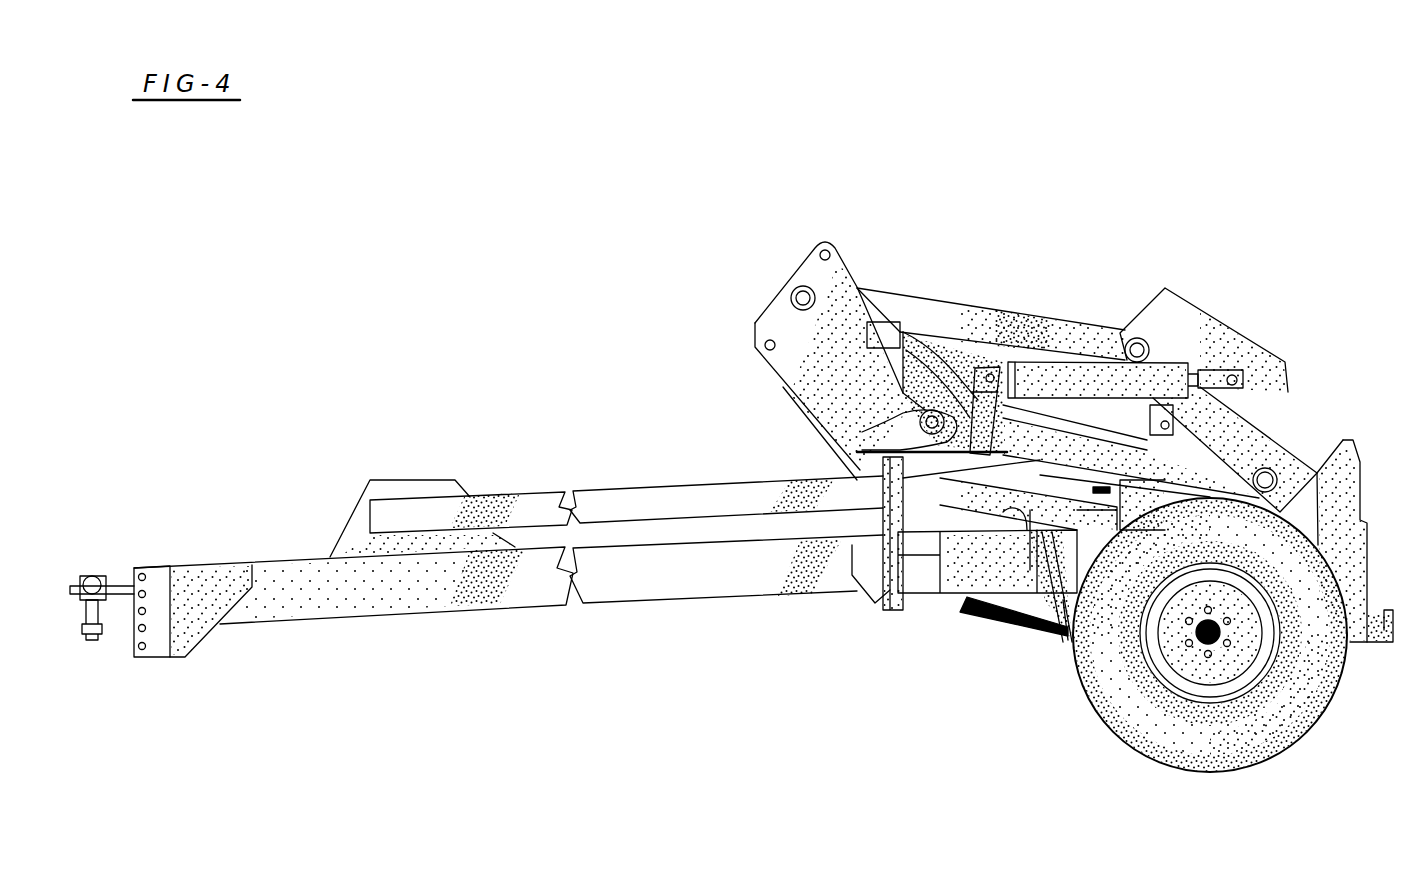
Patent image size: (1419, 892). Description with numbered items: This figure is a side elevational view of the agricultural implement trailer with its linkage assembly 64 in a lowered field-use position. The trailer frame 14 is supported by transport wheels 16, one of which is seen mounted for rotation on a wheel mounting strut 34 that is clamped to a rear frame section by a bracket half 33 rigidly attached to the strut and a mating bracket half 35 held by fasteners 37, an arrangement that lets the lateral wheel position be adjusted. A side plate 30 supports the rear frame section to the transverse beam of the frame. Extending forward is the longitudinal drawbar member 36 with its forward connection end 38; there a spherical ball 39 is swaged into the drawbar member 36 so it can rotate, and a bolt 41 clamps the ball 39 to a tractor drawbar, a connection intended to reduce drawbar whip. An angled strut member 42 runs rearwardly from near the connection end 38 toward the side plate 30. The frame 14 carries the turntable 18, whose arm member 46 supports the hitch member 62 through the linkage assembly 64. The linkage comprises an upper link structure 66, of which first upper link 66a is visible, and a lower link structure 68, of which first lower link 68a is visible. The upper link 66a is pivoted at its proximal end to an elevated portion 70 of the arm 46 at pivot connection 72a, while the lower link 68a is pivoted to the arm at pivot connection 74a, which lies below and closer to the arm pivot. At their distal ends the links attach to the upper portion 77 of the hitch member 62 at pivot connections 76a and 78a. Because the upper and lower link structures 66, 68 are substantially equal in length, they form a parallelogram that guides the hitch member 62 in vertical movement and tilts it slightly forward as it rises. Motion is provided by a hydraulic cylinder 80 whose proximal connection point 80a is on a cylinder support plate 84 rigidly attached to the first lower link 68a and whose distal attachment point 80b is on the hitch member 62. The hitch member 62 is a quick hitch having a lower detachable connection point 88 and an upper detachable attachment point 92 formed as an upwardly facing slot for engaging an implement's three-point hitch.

The trailer frame 14 is at (358, 556).
The transport wheels 16 is at (1303, 683).
The turntable 18 is at (772, 387).
The side plate 30 is at (952, 572).
The bracket half 33 is at (1017, 607).
The wheel mounting strut 34 is at (1027, 600).
The bracket half 35 is at (897, 593).
The drawbar member 36 is at (612, 593).
The fasteners 37 is at (970, 607).
The forward connection end 38 is at (124, 568).
The spherical ball 39 is at (80, 575).
The bolt 41 is at (96, 574).
The angled strut member 42 is at (610, 498).
The arm member 46 is at (1013, 478).
The hitch member 62 is at (1352, 437).
The linkage assembly 64 is at (930, 293).
The upper link structure 66 is at (968, 306).
The first upper link 66a is at (1027, 332).
The lower link structure 68 is at (1042, 473).
The first lower link 68a is at (1053, 447).
The elevated portion 70 is at (802, 417).
The pivot connection 72a is at (803, 298).
The pivot connection 74a is at (862, 437).
The pivot connection 76a is at (1135, 345).
The upper portion 77 is at (1237, 440).
The pivot connection 78a is at (1267, 478).
The hydraulic cylinder 80 is at (1080, 380).
The proximal connection point 80a is at (1233, 372).
The distal attachment point 80b is at (973, 372).
The cylinder support plate 84 is at (883, 320).
The lower detachable connection point 88 is at (1387, 612).
The upper detachable attachment point 92 is at (1387, 440).